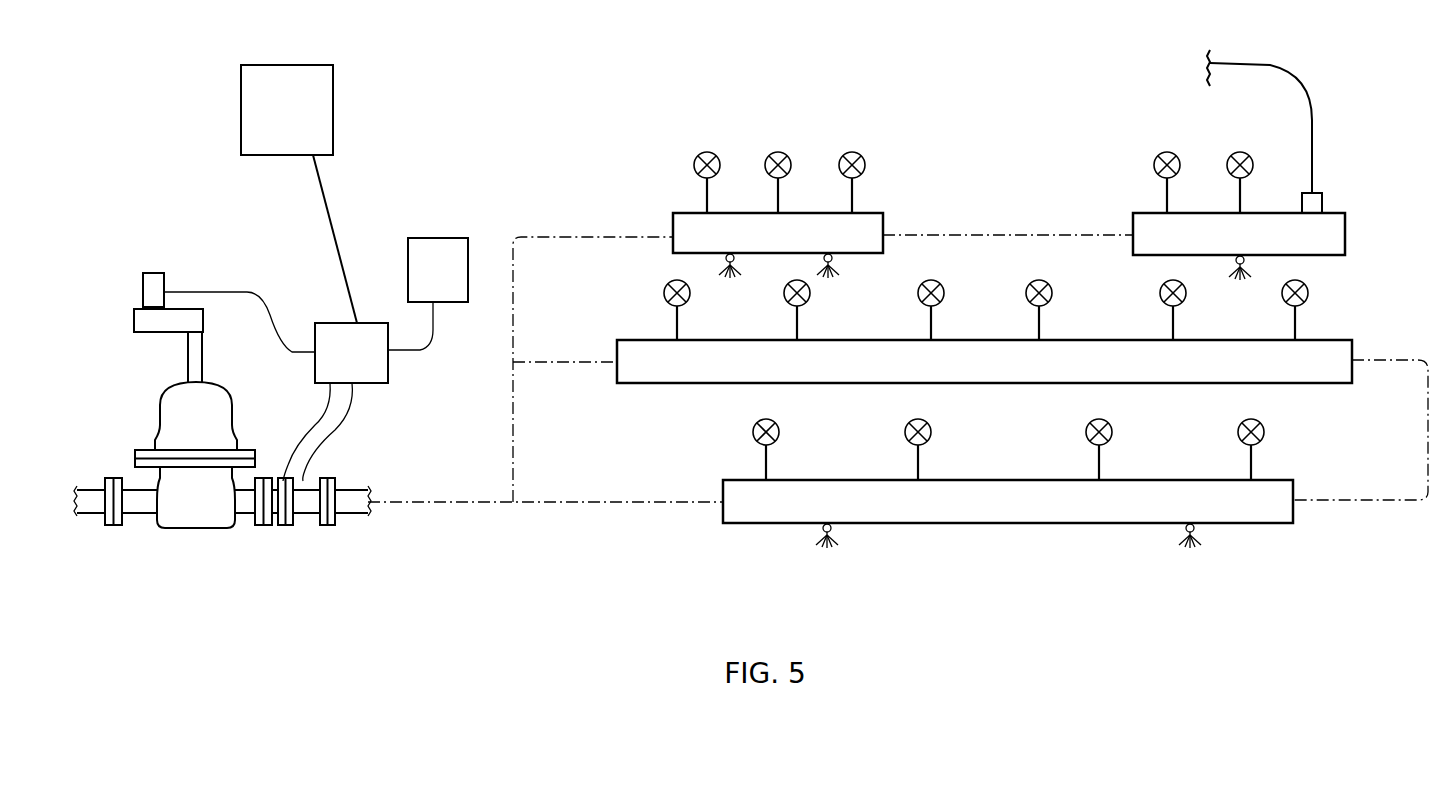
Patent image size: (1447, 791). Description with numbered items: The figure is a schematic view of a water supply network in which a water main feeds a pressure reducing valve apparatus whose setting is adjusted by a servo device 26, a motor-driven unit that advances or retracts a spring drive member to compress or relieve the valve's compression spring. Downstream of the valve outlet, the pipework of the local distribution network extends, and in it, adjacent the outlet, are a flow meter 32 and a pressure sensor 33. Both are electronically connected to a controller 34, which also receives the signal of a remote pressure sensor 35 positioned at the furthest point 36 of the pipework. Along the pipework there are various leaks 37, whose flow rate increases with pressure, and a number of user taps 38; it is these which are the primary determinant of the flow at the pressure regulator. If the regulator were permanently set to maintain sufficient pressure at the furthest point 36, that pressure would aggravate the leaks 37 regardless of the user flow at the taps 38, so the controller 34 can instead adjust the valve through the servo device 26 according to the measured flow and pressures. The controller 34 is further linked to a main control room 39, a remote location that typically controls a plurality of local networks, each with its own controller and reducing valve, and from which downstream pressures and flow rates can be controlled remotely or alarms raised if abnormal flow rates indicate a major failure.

The servo device 26 is at (152, 332).
The flow meter 32 is at (287, 527).
The pressure sensor 33 is at (312, 480).
The controller 34 is at (335, 323).
The remote pressure sensor 35 is at (438, 265).
The furthest point 36 is at (1328, 230).
The leaks 37 is at (840, 262).
The user taps 38 is at (855, 152).
The main control room 39 is at (265, 95).